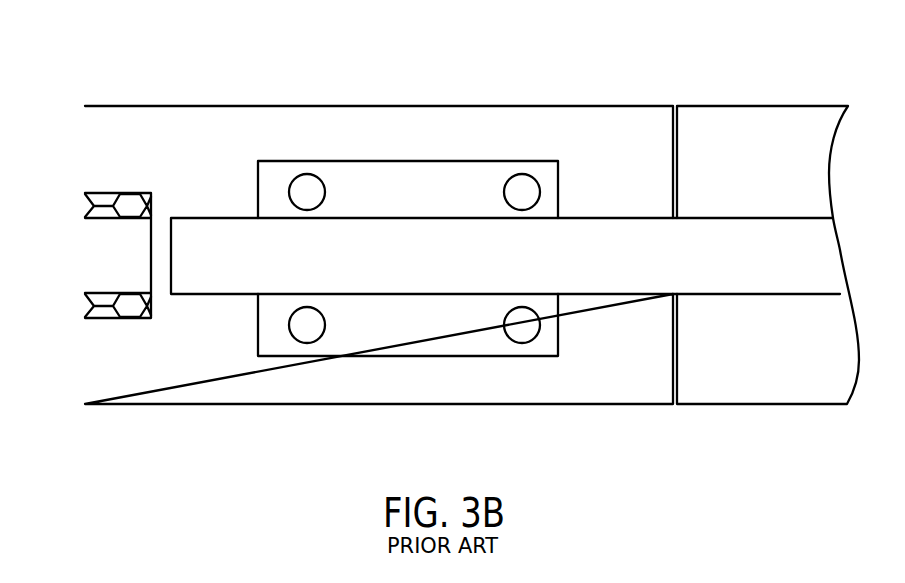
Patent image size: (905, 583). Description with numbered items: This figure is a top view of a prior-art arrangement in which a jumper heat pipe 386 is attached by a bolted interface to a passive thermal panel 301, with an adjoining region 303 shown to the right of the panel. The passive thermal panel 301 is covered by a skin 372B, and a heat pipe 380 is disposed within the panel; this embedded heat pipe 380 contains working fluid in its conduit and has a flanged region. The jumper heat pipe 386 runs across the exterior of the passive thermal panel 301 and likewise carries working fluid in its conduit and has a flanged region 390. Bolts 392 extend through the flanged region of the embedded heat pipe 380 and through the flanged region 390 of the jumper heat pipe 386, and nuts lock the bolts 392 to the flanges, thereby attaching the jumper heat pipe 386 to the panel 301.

The passive thermal panel 301 is at (533, 83).
The extension member 303 is at (745, 83).
The skin 372B is at (151, 121).
The heat pipe 380 is at (93, 254).
The jumper heat pipe 386 is at (218, 288).
The flanged region 390 is at (400, 182).
The bolts 392 is at (537, 191).